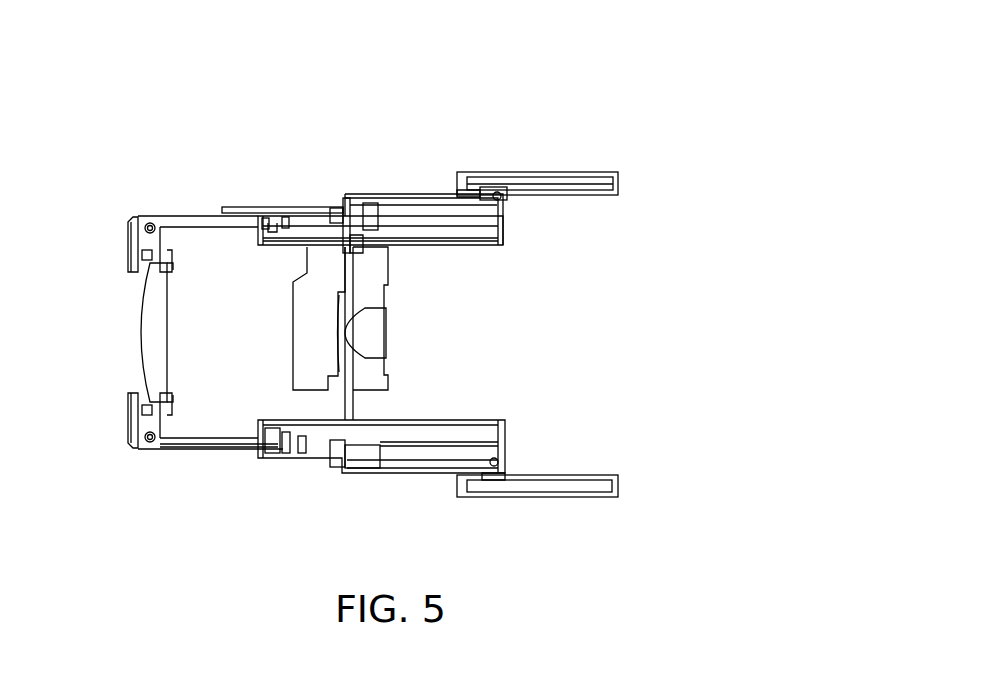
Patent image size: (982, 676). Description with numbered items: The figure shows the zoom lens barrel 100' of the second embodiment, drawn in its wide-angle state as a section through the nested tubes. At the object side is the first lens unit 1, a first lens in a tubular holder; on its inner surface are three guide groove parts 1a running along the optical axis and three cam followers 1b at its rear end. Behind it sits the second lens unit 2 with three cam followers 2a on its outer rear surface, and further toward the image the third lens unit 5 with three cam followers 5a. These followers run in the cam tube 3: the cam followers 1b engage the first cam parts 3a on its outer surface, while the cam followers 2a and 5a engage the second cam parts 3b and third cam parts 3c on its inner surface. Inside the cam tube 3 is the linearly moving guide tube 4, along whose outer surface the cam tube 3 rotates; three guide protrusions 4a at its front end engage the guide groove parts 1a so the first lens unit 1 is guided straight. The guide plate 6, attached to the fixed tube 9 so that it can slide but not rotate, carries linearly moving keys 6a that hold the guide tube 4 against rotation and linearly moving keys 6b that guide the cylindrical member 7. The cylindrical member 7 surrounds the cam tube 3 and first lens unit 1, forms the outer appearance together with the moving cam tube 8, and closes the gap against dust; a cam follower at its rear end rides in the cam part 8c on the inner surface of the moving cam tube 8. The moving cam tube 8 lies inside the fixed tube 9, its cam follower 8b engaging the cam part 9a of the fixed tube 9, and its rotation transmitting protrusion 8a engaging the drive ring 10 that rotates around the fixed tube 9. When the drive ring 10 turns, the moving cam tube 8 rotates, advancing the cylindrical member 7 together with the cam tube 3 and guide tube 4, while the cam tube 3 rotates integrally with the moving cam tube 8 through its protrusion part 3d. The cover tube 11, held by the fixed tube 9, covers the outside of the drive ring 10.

The zoom lens barrel 100' is at (162, 265).
The first lens unit 1 is at (138, 325).
The guide groove parts 1a is at (225, 446).
The cam followers 1b is at (275, 440).
The second lens unit 2 is at (283, 457).
The cam followers 2a is at (380, 478).
The cam tube 3 is at (301, 205).
The first cam parts 3a is at (275, 437).
The second cam parts 3b is at (337, 453).
The third cam parts 3c is at (356, 244).
The protrusion part 3d is at (367, 200).
The linearly moving guide tube 4 is at (300, 456).
The guide protrusions 4a is at (266, 215).
The third lens unit 5 is at (377, 340).
The cam followers 5a is at (352, 200).
The guide plate 6 is at (503, 240).
The linearly moving keys 6a is at (462, 248).
The linearly moving keys 6b is at (408, 228).
The cylindrical member 7 is at (250, 200).
The moving cam tube 8 is at (402, 200).
The rotation transmitting protrusion 8a is at (490, 192).
The cam follower 8b is at (463, 196).
The cam part 8c is at (343, 200).
The fixed tube 9 is at (575, 172).
The cam part 9a is at (494, 462).
The drive ring 10 is at (517, 175).
The cover tube 11 is at (463, 502).